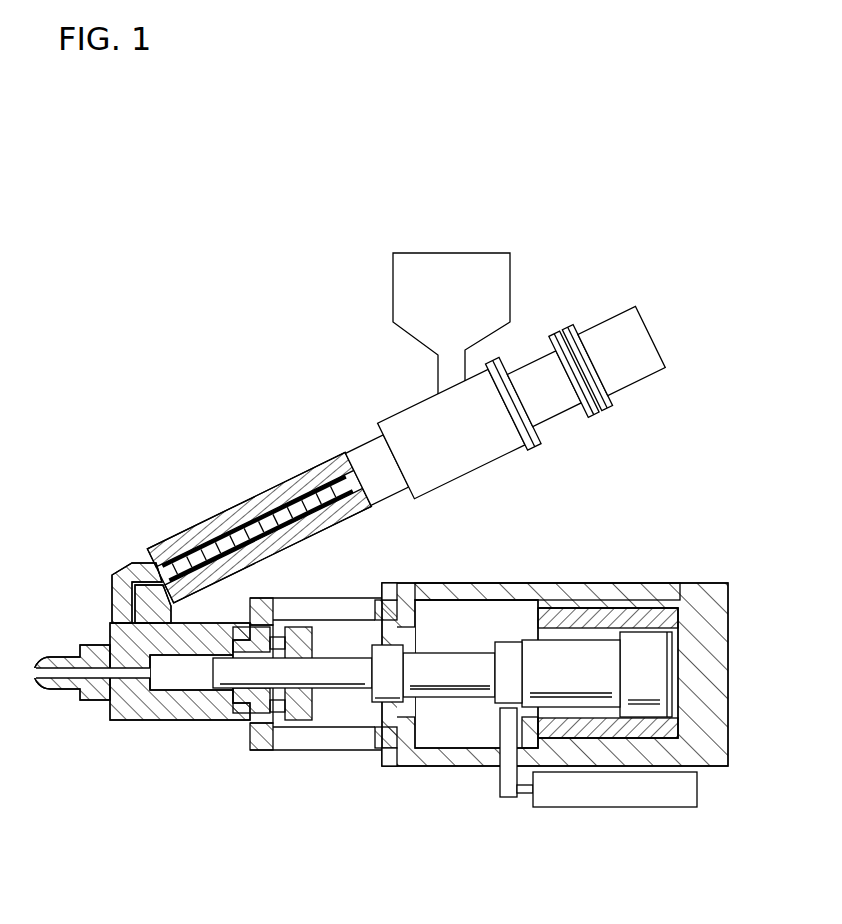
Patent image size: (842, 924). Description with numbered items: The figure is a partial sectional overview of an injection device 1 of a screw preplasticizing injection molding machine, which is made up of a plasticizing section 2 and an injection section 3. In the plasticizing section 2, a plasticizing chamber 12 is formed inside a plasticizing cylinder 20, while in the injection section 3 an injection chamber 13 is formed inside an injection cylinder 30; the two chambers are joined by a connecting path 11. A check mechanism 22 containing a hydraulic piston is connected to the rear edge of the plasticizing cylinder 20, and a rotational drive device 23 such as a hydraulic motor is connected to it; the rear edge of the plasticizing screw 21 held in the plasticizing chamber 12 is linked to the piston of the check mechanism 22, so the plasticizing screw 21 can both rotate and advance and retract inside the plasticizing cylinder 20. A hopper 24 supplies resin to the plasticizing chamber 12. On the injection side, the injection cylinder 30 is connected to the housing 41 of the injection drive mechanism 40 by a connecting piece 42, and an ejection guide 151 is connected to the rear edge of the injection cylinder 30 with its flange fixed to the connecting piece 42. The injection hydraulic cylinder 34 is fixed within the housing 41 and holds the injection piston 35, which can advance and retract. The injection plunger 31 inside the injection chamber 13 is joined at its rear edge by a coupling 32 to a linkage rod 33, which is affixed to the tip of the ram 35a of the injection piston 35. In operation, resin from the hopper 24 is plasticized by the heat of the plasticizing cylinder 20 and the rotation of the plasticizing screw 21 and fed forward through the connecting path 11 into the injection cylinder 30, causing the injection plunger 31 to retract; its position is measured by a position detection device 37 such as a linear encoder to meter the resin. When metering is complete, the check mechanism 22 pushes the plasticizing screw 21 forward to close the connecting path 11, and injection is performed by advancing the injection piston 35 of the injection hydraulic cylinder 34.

The injection device 1 is at (244, 468).
The plasticizing section 2 is at (303, 463).
The plasticizing cylinder 20 is at (352, 447).
The plasticizing screw 21 is at (203, 528).
The check mechanism 22 is at (576, 423).
The rotational drive device 23 is at (651, 378).
The hopper 24 is at (393, 284).
The connecting path 11 is at (113, 577).
The plasticizing chamber 12 is at (151, 577).
The injection chamber 13 is at (147, 721).
The injection section 3 is at (150, 742).
The injection cylinder 30 is at (200, 716).
The injection plunger 31 is at (232, 700).
The ejection guide 151 is at (286, 725).
The coupling 32 is at (384, 703).
The linkage rod 33 is at (450, 698).
The injection drive mechanism 40 is at (573, 556).
The housing 41 is at (500, 582).
The connecting piece 42 is at (343, 598).
The injection hydraulic cylinder 34 is at (603, 600).
The injection piston 35 is at (655, 583).
The ram 35a is at (575, 712).
The position detection device 37 is at (652, 807).